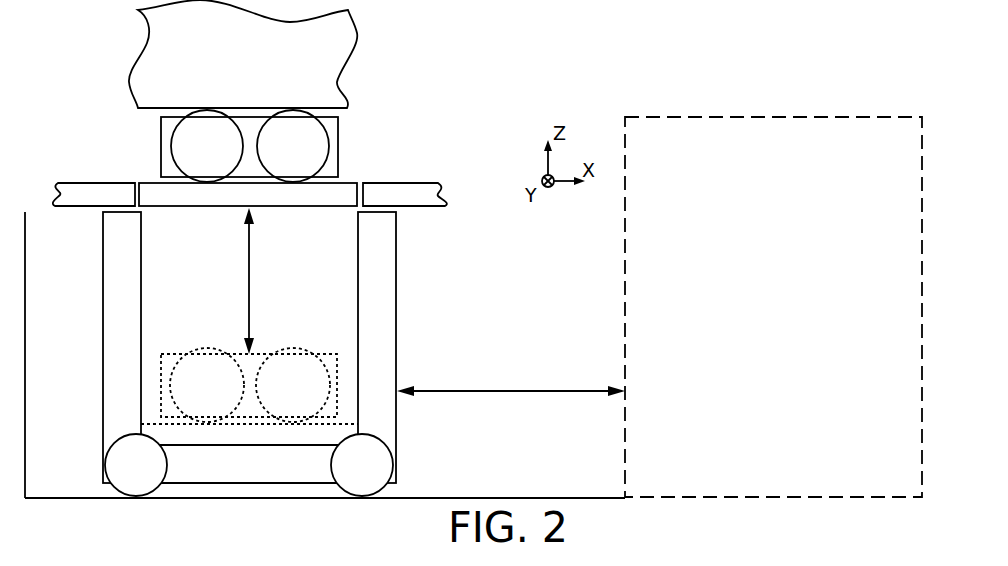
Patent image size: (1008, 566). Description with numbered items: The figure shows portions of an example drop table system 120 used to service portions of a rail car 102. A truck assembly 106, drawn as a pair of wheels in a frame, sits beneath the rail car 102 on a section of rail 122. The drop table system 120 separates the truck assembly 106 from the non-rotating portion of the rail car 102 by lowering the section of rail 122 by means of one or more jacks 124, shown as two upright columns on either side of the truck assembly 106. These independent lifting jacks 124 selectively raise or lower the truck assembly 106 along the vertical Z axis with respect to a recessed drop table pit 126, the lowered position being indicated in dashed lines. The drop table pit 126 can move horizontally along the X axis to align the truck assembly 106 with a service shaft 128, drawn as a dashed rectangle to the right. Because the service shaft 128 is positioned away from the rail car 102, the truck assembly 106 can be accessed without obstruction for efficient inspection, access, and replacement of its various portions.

The rail car 102 is at (261, 69).
The truck assembly 106 is at (360, 137).
The drop table system 120 is at (773, 275).
The section of rail 122 is at (210, 207).
The jacks 124 is at (103, 291).
The drop table pit 126 is at (58, 488).
The service shaft 128 is at (790, 489).